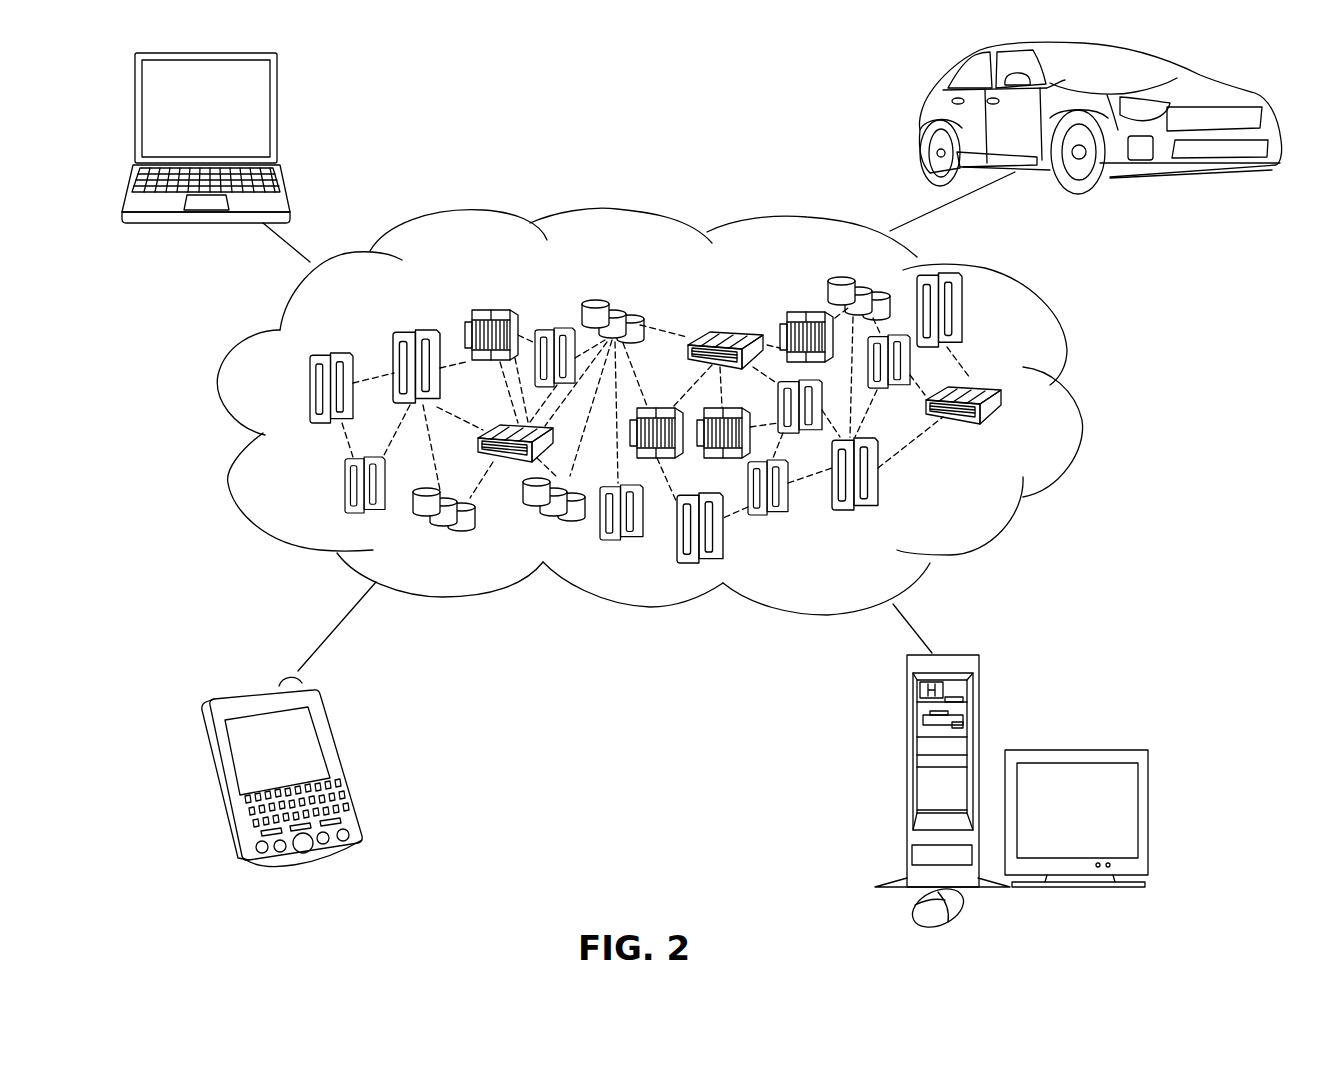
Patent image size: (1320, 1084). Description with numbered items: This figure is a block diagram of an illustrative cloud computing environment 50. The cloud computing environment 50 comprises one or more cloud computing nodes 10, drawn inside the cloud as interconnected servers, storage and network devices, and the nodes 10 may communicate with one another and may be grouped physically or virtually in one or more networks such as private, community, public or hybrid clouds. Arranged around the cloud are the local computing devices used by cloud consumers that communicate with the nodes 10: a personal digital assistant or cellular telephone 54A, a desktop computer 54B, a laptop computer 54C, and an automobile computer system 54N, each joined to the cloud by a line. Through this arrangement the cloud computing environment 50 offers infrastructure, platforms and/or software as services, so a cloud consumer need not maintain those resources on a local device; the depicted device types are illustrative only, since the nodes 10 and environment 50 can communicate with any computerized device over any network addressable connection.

The cloud computing node 10 is at (988, 508).
The cloud computing environment 50 is at (1073, 400).
The personal digital assistant (PDA) or cellular telephone 54A is at (332, 732).
The desktop computer 54B is at (905, 715).
The laptop computer 54C is at (277, 92).
The automobile computer system 54N is at (920, 110).